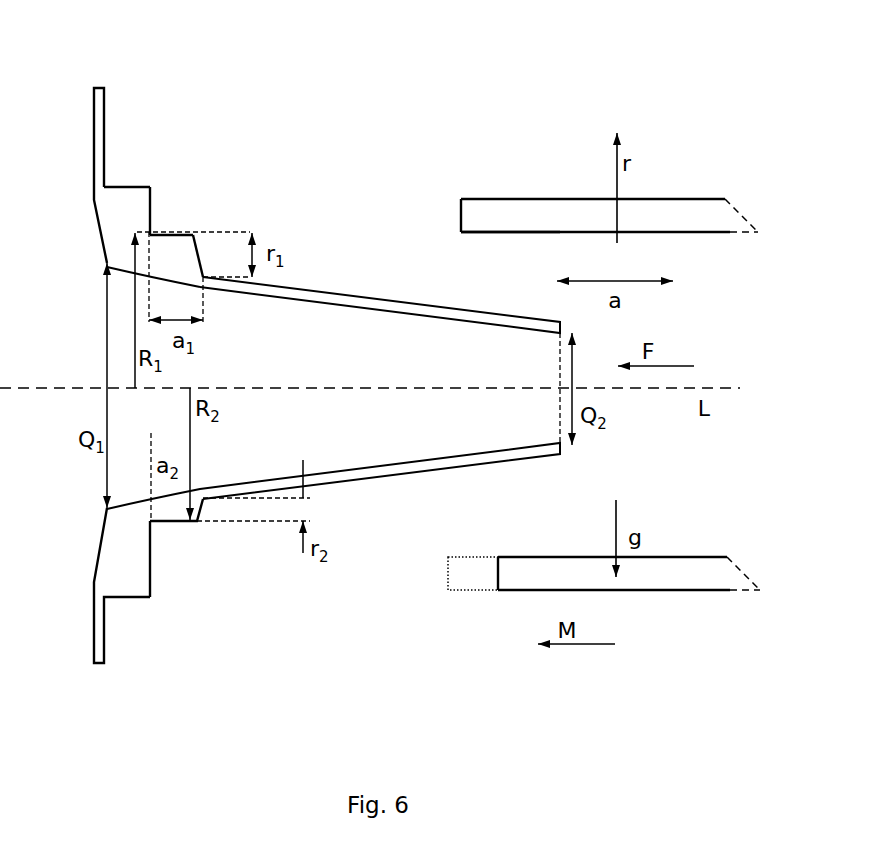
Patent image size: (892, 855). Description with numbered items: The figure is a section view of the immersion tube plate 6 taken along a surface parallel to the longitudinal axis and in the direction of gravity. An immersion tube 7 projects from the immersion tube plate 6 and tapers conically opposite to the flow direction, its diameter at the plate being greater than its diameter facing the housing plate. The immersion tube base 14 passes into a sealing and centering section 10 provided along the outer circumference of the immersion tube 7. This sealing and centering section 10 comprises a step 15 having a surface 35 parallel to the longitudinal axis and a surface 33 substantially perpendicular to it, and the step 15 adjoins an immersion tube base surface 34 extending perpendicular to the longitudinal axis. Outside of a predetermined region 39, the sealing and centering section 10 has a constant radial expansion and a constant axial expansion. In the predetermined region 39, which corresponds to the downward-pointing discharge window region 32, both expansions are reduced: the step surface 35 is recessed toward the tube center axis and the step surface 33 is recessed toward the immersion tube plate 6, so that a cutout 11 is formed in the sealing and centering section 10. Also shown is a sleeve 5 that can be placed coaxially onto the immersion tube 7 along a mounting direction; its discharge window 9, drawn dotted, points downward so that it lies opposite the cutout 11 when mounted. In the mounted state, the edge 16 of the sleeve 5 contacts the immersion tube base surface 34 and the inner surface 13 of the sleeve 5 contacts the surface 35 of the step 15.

The sleeve 5 is at (668, 204).
The immersion tube plate 6 is at (105, 100).
The immersion tube 7 is at (393, 301).
The discharge window 9 is at (486, 574).
The sealing and centering section 10 is at (195, 192).
The cutout 11 is at (178, 523).
The inner surface 13 is at (518, 233).
The immersion tube base 14 is at (147, 178).
The step 15 is at (203, 250).
The edge 16 is at (461, 215).
The discharge window region 32 is at (236, 554).
The step surface 33 is at (193, 236).
The immersion tube base surface 34 is at (150, 203).
The step surface 35 is at (178, 229).
The predetermined region 39 is at (190, 530).